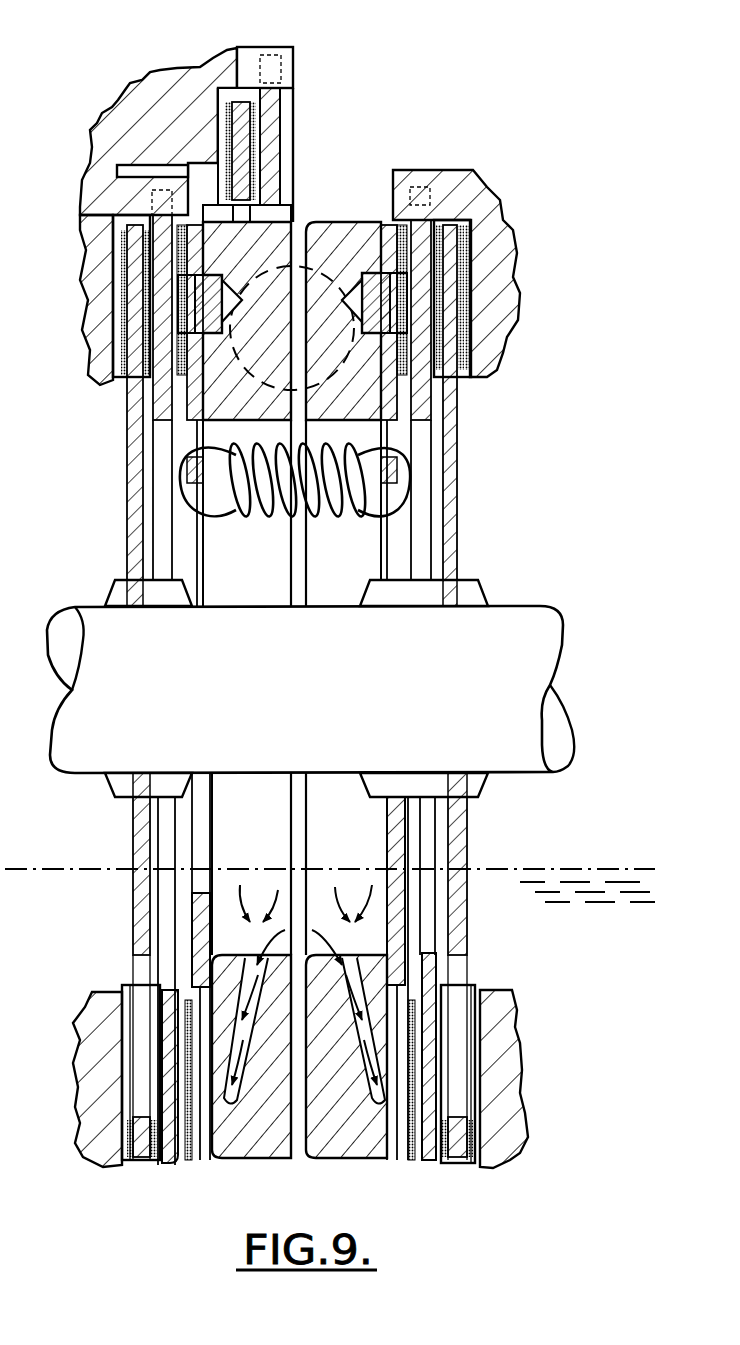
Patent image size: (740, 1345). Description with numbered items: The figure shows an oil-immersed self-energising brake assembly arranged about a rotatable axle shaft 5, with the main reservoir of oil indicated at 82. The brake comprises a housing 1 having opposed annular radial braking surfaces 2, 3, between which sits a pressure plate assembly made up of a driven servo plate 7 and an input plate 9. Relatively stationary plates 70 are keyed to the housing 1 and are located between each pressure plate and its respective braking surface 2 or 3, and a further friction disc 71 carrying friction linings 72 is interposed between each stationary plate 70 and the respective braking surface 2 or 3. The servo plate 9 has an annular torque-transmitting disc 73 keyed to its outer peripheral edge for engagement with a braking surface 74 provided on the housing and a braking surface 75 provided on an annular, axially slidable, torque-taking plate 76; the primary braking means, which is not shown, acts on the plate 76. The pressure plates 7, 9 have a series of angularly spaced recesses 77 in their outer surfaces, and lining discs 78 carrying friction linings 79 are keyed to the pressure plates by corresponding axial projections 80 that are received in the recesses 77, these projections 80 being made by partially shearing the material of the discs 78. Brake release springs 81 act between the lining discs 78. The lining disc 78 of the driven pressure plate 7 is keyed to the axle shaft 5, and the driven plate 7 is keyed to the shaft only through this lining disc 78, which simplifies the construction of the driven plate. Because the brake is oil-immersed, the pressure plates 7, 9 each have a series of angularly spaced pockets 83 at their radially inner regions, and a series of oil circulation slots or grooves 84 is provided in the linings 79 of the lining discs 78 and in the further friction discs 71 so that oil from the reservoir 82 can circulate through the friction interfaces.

The housing 1 is at (150, 83).
The braking surface 2 is at (477, 340).
The braking surface 3 is at (135, 398).
The axle shaft 5 is at (402, 679).
The driven servo plate 7 is at (332, 1137).
The input plate 9 is at (255, 1137).
The stationary plate 70 is at (415, 220).
The further friction disc 71 is at (465, 420).
The friction linings 72 is at (433, 228).
The torque-transmitting disc 73 is at (222, 170).
The braking surface 74 is at (212, 88).
The braking surface 75 is at (247, 83).
The torque-taking plate 76 is at (272, 120).
The recesses 77 is at (330, 238).
The lining disc 78 is at (388, 232).
The friction linings 79 is at (175, 275).
The axial projections 80 is at (210, 297).
The brake release springs 81 is at (256, 518).
The main reservoir of oil 82 is at (598, 866).
The pockets 83 is at (222, 960).
The oil circulation slots or grooves 84 is at (153, 1000).